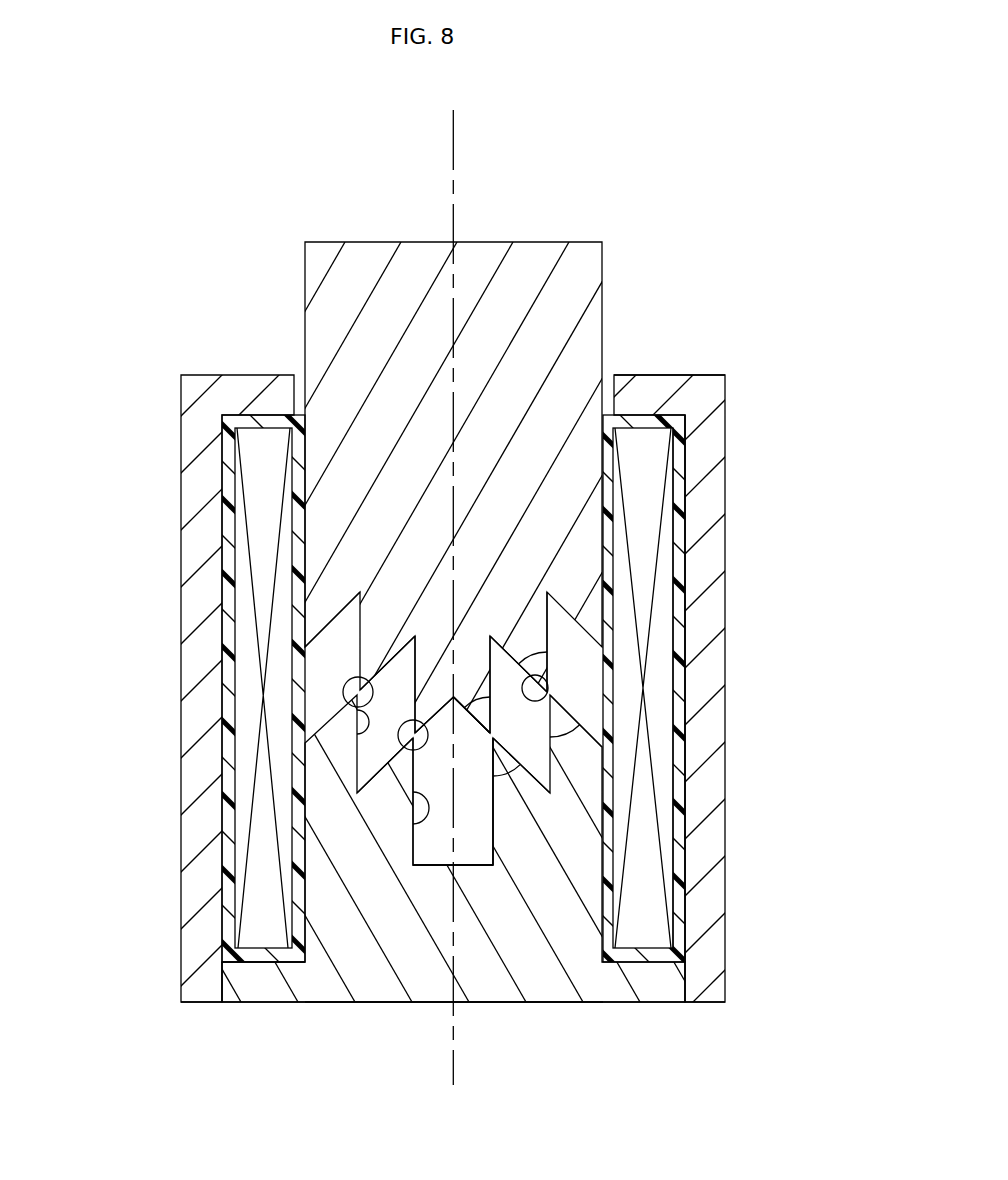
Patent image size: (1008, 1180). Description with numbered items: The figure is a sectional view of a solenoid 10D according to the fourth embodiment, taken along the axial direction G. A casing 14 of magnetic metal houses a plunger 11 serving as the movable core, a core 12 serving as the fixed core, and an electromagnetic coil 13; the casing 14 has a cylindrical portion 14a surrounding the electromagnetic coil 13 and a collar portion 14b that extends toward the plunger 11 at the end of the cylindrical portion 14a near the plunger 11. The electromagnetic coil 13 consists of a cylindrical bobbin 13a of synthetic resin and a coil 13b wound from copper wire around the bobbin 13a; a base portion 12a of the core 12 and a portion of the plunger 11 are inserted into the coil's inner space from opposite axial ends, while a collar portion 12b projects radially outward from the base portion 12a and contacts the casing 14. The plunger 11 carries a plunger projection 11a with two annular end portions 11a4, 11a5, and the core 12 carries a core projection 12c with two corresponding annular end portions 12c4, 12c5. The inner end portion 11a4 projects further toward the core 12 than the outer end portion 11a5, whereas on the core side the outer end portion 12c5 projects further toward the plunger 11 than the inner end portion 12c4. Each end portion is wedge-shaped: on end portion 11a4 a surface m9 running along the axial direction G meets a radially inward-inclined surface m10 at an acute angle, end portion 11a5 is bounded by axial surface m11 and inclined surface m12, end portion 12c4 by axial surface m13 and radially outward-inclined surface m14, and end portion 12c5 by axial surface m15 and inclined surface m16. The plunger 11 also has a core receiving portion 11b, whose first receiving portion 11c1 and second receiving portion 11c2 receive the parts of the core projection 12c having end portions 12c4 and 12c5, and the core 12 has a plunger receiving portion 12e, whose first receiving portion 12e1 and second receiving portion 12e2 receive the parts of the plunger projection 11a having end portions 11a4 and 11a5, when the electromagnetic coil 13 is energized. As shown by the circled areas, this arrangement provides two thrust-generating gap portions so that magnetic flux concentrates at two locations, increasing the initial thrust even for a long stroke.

The solenoid 10D is at (663, 117).
The axial direction G is at (454, 148).
The plunger 11 is at (609, 279).
The plunger projection 11a is at (435, 623).
The end portion 11a4 is at (482, 720).
The end portion 11a5 is at (521, 667).
The core receiving portion 11b is at (399, 679).
The first receiving portion 11c1 is at (407, 657).
The second receiving portion 11c2 is at (345, 628).
The core 12 is at (587, 1009).
The base portion 12a is at (368, 920).
The collar portion 12b is at (252, 990).
The core projection 12c is at (514, 826).
The end portion 12c4 is at (528, 772).
The end portion 12c5 is at (556, 705).
The plunger receiving portion 12e is at (436, 845).
The first receiving portion 12e1 is at (475, 843).
The second receiving portion 12e2 is at (378, 772).
The electromagnetic coil 13 is at (696, 858).
The bobbin 13a is at (678, 895).
The coil 13b is at (650, 912).
The casing 14 is at (731, 426).
The cylindrical portion 14a is at (706, 488).
The collar portion 14b is at (648, 385).
The surface m9 is at (492, 698).
The surface m10 is at (468, 708).
The surface m11 is at (547, 642).
The surface m12 is at (550, 686).
The surface m13 is at (421, 810).
The surface m14 is at (370, 730).
The surface m15 is at (397, 740).
The surface m16 is at (343, 700).